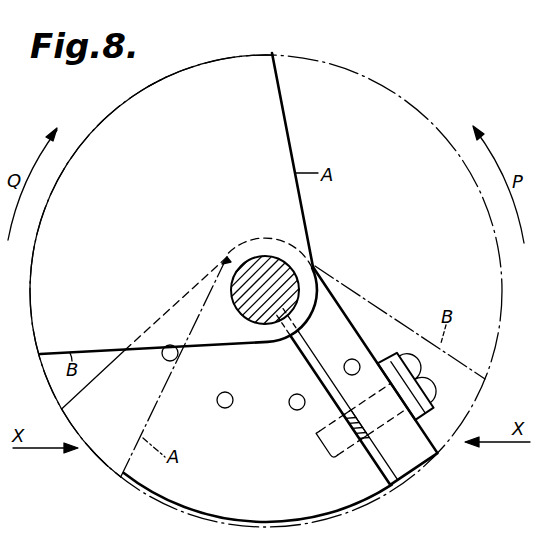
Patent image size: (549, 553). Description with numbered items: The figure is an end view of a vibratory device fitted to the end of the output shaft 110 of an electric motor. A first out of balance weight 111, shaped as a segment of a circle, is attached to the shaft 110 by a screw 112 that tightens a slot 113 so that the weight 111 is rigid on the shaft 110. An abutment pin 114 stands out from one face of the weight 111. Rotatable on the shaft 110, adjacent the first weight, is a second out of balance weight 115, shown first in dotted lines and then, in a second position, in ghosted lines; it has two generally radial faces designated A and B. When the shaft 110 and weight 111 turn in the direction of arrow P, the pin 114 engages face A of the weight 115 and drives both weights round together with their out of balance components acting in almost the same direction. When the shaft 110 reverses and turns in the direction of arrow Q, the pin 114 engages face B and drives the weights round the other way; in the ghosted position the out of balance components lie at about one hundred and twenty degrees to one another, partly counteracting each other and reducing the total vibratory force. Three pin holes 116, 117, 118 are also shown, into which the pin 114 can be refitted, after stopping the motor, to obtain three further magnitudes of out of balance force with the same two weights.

The shaft 110 is at (287, 275).
The first out of balance weight 111 is at (100, 445).
The screw 112 is at (402, 443).
The slot 113 is at (392, 478).
The abutment pin 114 is at (178, 355).
The second out of balance weight 115 is at (151, 93).
The pin hole 116 is at (228, 408).
The pin hole 117 is at (295, 410).
The pin hole 118 is at (346, 361).